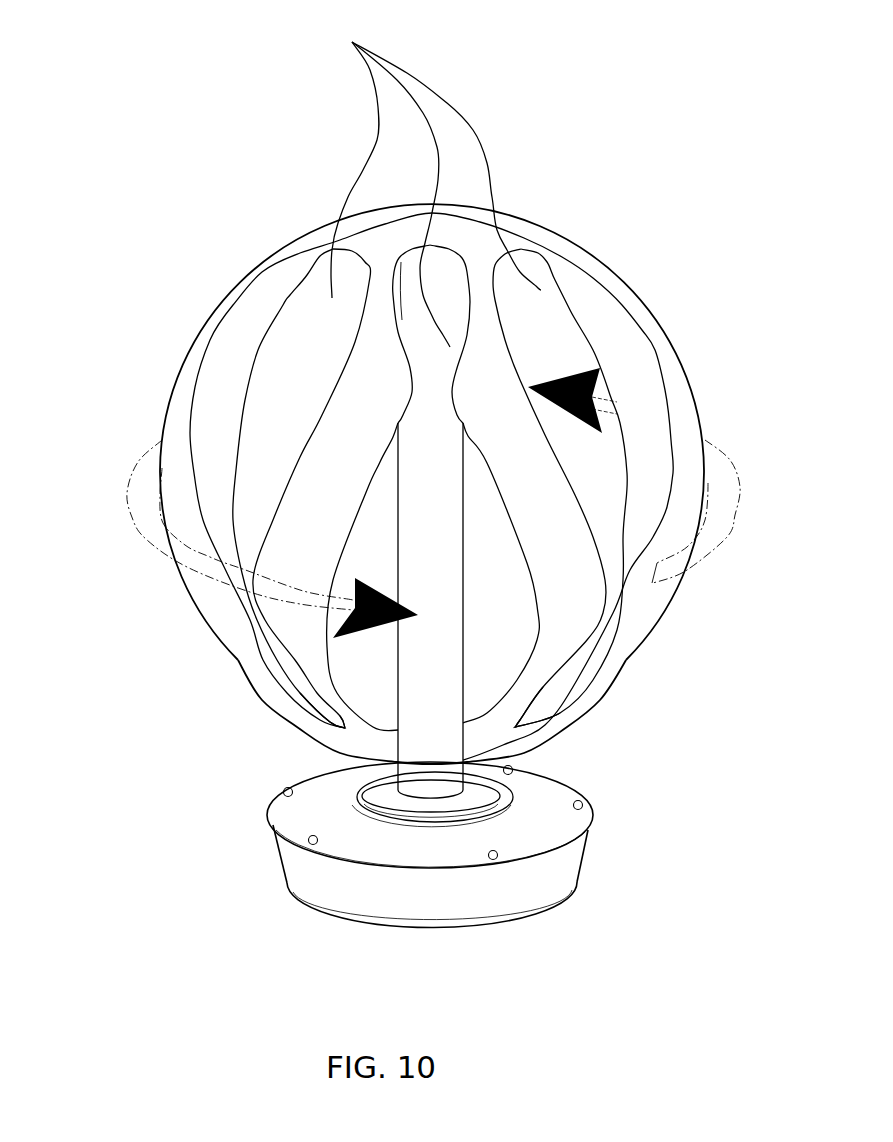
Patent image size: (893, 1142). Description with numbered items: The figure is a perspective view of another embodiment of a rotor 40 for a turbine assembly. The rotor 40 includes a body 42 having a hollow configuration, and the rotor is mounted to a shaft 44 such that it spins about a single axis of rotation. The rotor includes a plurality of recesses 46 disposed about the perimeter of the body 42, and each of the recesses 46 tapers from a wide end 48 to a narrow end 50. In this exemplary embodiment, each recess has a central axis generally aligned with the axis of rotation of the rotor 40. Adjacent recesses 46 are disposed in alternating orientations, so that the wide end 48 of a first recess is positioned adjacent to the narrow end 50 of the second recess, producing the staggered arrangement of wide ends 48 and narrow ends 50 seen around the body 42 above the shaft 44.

The rotor 40 is at (217, 632).
The body 42 is at (172, 482).
The shaft 44 is at (357, 797).
The recesses 46 is at (430, 179).
The wide end 48 is at (289, 297).
The narrow end 50 is at (457, 273).